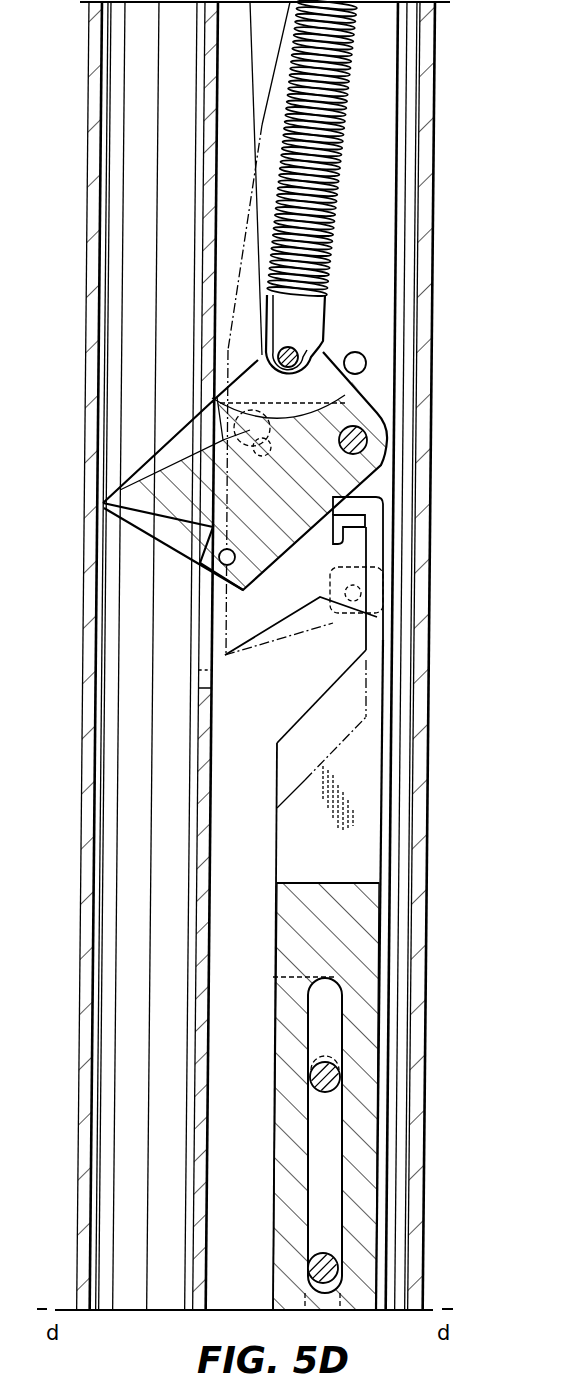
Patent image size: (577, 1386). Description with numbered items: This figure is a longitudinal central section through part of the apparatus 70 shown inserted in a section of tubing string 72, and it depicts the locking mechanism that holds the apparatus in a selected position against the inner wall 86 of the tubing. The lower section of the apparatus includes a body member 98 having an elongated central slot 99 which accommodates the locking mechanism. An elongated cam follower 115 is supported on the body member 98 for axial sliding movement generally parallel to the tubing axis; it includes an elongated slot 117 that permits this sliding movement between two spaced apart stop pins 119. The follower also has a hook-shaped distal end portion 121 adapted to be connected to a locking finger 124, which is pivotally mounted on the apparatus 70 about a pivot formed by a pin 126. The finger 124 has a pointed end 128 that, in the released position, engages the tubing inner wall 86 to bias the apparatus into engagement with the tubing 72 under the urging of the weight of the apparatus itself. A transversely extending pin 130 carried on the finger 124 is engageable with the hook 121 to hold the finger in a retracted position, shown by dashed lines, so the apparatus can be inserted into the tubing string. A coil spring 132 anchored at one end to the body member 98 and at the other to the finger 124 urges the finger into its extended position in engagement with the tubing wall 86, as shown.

The apparatus 70 is at (174, 186).
The tubing string 72 is at (88, 133).
The inner wall 86 is at (108, 719).
The body member 98 is at (393, 764).
The central slot 99 is at (233, 932).
The cam follower 115 is at (384, 1108).
The slot 117 is at (339, 1007).
The stop pins 119 is at (340, 1083).
The distal end portion 121 is at (384, 492).
The locking finger 124 is at (178, 562).
The pin 126 is at (368, 440).
The pointed end 128 is at (103, 503).
The pin 130 is at (237, 558).
The coil spring 132 is at (326, 262).